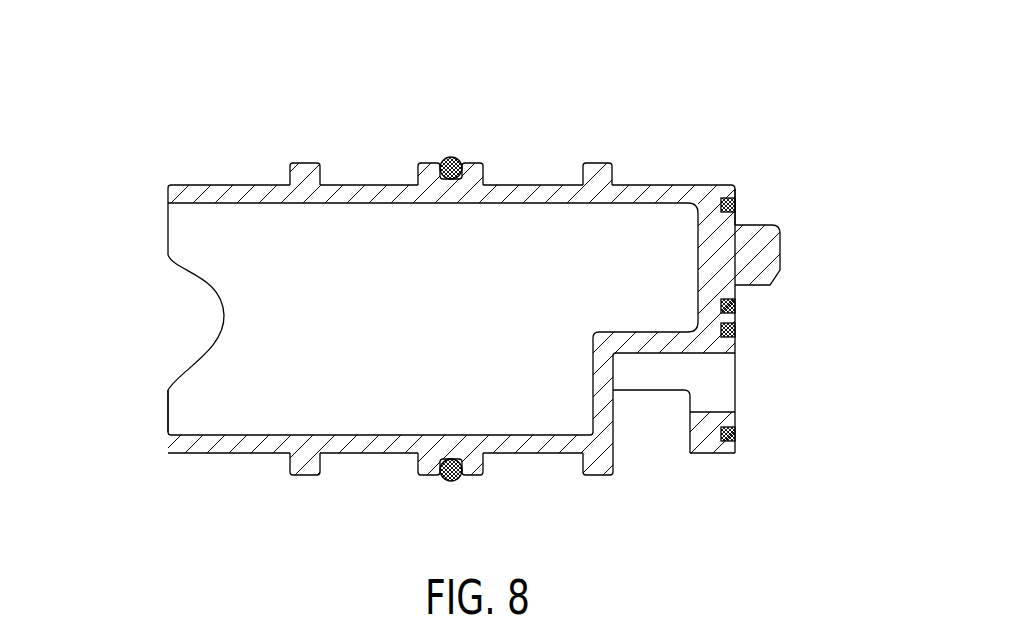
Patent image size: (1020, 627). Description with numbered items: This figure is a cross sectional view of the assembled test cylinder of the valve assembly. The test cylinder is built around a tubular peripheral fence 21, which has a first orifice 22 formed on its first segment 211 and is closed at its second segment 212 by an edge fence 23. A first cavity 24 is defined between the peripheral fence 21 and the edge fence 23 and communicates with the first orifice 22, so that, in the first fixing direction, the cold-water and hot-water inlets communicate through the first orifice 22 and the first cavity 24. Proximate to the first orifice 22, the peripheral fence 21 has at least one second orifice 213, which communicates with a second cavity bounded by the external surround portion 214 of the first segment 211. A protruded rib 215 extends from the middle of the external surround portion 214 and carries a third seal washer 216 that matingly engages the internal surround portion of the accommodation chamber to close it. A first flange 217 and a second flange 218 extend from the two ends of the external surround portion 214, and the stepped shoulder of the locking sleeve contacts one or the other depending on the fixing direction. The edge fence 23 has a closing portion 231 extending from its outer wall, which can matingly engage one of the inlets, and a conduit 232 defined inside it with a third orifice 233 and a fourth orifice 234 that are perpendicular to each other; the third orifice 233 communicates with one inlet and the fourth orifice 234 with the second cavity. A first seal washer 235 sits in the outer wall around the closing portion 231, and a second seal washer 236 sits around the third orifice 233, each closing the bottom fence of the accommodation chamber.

The peripheral fence 21 is at (372, 185).
The first orifice 22 is at (183, 232).
The edge fence 23 is at (730, 358).
The first cavity 24 is at (523, 232).
The first segment 211 is at (168, 443).
The second segment 212 is at (735, 187).
The second orifice 213 is at (193, 323).
The external surround portion 214 is at (238, 185).
The protruded rib 215 is at (436, 163).
The third seal washer 216 is at (452, 157).
The first flange 217 is at (302, 480).
The second flange 218 is at (597, 480).
The closing portion 231 is at (780, 263).
The conduit 232 is at (660, 372).
The third orifice 233 is at (713, 397).
The fourth orifice 234 is at (647, 440).
The first seal washer 235 is at (735, 207).
The second seal washer 236 is at (735, 432).